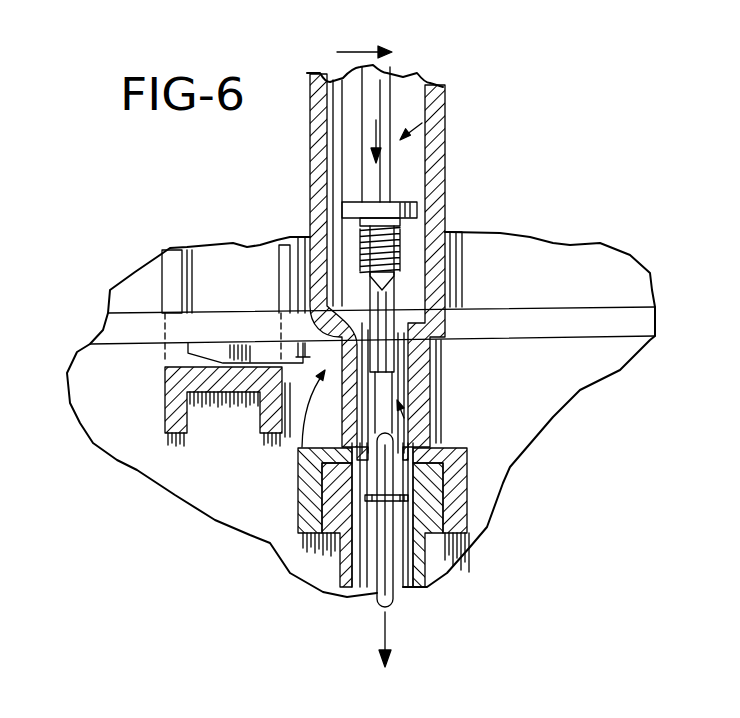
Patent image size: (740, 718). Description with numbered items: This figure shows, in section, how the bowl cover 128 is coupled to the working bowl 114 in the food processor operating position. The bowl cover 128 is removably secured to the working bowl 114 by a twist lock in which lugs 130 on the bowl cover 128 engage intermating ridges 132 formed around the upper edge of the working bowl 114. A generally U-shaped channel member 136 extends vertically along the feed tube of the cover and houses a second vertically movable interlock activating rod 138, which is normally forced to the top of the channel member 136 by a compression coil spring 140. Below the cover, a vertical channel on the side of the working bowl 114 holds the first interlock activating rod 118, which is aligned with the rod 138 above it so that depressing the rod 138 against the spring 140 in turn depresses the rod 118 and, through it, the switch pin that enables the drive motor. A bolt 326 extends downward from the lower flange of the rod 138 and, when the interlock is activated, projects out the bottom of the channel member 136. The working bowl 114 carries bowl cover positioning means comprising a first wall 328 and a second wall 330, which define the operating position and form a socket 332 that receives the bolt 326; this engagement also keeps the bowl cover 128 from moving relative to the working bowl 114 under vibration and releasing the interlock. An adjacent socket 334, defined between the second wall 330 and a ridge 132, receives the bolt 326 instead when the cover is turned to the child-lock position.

The working bowl 114 is at (583, 367).
The interlock activating rod 118 is at (406, 586).
The bowl cover 128 is at (517, 307).
The lugs 130 is at (170, 384).
The ridges 132 is at (212, 348).
The channel member 136 is at (316, 138).
The interlock activating rod 138 is at (447, 117).
The compression coil spring 140 is at (447, 206).
The bolt 326 is at (432, 357).
The first wall 328 is at (430, 408).
The second wall 330 is at (305, 440).
The socket 332 is at (430, 421).
The socket 334 is at (343, 427).